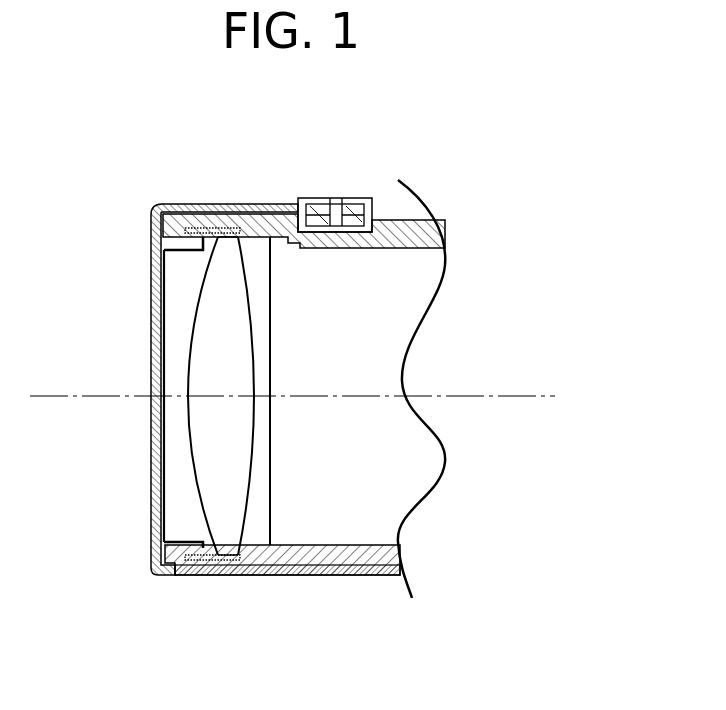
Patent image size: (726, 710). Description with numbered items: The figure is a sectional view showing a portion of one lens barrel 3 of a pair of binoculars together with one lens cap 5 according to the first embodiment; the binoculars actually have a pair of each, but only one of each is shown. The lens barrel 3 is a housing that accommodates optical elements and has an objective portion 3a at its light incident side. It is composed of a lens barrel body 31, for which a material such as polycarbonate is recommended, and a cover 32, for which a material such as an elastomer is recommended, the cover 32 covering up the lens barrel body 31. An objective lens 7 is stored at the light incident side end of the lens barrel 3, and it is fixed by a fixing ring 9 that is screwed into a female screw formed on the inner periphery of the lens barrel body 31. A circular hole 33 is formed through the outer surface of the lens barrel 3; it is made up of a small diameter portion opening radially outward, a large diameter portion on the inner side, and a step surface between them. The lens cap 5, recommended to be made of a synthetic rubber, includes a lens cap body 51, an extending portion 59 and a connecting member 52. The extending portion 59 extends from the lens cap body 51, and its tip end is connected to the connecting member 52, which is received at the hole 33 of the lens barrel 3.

The lens cap 5 is at (138, 346).
The lens cap body 51 is at (156, 421).
The extending portion 59 is at (188, 203).
The connecting member 52 is at (302, 182).
The hole 33 is at (341, 199).
The lens barrel 3 is at (271, 584).
The objective portion 3a is at (325, 576).
The lens barrel body 31 is at (385, 553).
The cover 32 is at (393, 566).
The objective lens 7 is at (199, 455).
The fixing ring 9 is at (194, 546).